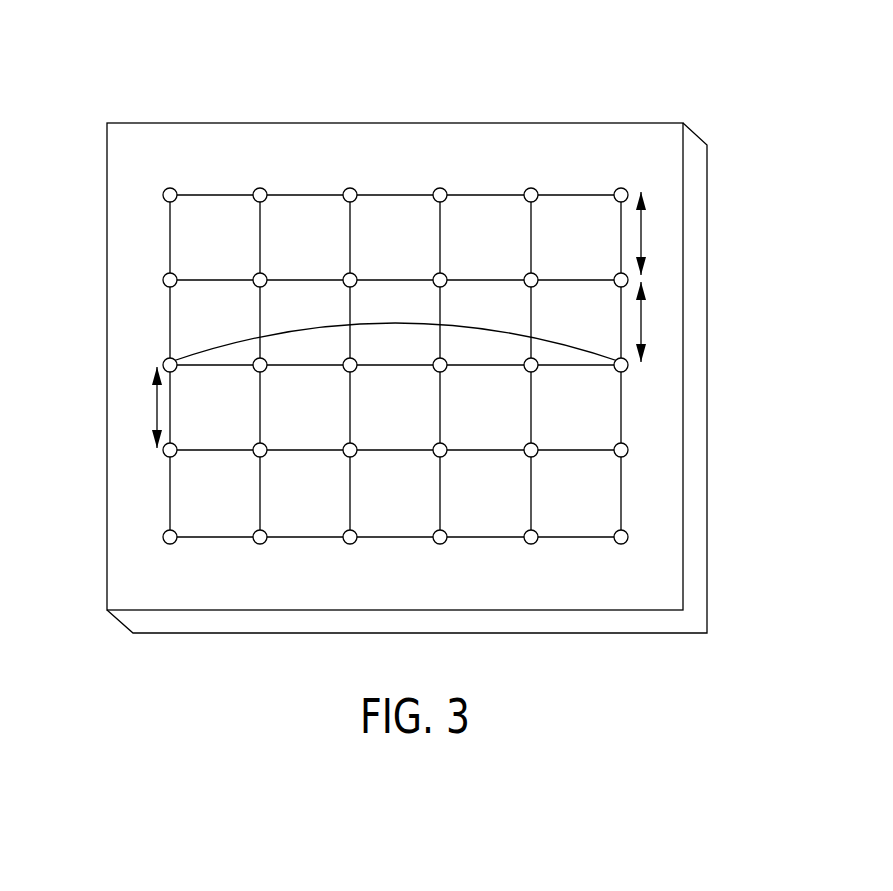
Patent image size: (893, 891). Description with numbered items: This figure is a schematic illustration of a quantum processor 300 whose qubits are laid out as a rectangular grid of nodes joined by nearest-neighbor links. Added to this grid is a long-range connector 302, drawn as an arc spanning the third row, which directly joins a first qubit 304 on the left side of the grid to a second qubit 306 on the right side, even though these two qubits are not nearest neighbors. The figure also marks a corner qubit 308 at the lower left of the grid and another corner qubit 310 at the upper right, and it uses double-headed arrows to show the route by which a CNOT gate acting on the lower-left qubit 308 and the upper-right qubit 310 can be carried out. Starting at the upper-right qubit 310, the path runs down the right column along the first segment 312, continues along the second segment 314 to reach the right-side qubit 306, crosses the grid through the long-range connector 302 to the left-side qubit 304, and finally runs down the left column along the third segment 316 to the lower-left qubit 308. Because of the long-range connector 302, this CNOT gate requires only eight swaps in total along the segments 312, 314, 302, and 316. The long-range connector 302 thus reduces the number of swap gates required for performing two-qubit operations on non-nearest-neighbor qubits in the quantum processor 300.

The quantum processor 300 is at (484, 93).
The long-range connector 302 is at (270, 332).
The qubit Q02 304 is at (162, 362).
The qubit Q52 306 is at (628, 367).
The qubit Q00 308 is at (164, 534).
The qubit Q54 310 is at (632, 193).
The swap path segment 312 is at (642, 237).
The swap path segment 314 is at (641, 320).
The swap path segment 316 is at (156, 418).